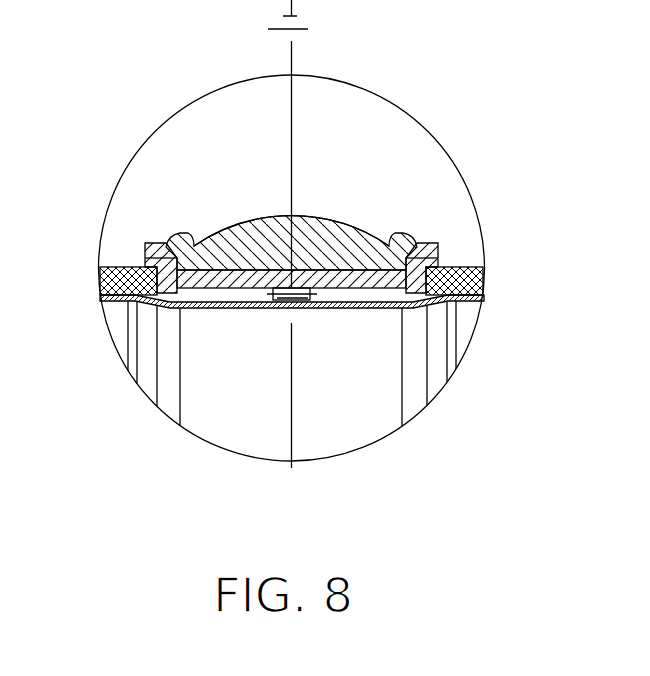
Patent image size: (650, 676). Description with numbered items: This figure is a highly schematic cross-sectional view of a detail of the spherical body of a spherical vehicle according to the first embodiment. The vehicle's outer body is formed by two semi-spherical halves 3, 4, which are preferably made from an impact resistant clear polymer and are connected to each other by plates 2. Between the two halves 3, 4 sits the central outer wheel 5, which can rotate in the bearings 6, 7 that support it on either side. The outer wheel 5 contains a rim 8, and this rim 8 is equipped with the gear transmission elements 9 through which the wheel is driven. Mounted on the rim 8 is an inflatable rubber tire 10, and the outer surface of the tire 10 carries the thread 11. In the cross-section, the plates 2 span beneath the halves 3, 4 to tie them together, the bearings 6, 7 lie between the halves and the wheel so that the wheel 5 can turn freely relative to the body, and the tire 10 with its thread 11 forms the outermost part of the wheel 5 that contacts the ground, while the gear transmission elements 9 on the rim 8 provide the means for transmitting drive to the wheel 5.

The plate 2 is at (250, 305).
The semi-spherical half 3 is at (484, 289).
The semi-spherical half 4 is at (122, 267).
The central outer wheel 5 is at (317, 253).
The bearing 6 is at (440, 250).
The bearing 7 is at (165, 243).
The rim 8 is at (418, 243).
The gear transmission element 9 is at (295, 299).
The inflatable rubber tire 10 is at (247, 253).
The thread 11 is at (274, 215).